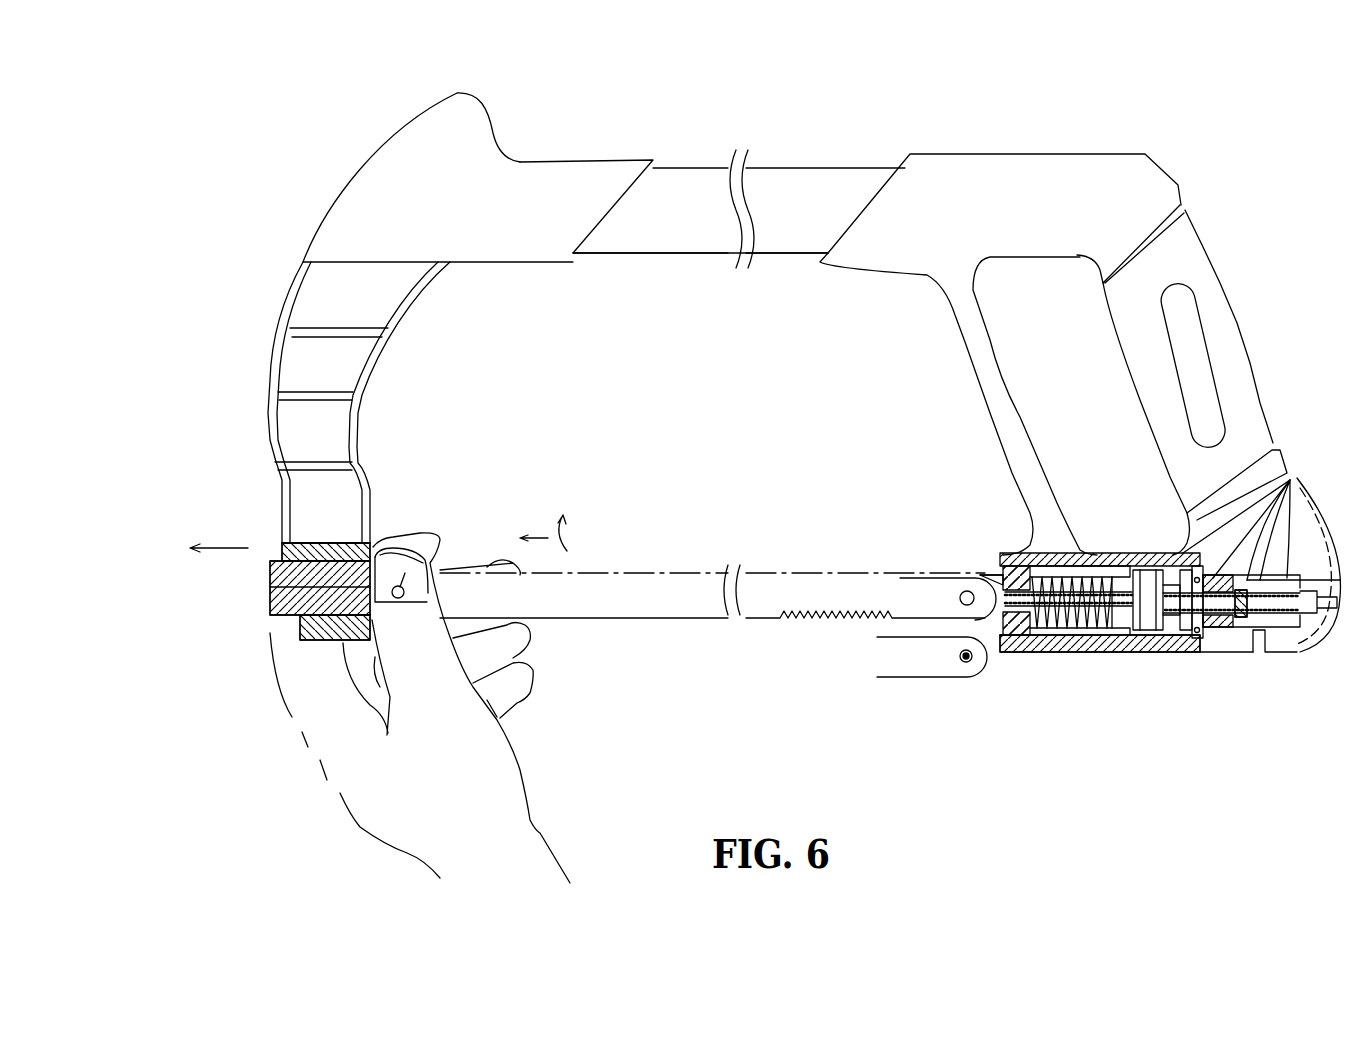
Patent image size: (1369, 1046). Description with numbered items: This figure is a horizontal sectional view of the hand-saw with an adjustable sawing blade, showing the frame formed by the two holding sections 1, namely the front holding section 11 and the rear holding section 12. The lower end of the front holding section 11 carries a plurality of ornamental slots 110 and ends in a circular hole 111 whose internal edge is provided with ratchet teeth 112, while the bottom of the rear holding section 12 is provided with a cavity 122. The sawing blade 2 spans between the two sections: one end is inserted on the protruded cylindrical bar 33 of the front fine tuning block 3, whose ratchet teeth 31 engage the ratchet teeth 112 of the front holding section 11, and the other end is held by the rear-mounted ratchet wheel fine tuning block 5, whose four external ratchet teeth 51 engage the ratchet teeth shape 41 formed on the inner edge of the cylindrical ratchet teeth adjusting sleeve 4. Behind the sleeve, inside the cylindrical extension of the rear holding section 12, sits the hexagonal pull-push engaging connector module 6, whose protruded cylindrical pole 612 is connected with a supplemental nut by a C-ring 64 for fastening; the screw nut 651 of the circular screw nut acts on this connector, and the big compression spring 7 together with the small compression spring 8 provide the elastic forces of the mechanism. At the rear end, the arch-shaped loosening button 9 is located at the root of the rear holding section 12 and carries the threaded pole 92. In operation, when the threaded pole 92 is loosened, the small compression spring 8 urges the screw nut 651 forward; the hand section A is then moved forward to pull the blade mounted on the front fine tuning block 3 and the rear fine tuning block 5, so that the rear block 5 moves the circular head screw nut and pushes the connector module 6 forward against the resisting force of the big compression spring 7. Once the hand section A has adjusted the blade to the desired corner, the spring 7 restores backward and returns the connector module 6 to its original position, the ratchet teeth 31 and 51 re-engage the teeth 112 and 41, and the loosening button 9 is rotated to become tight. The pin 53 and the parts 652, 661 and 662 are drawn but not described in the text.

The holding sections 1 is at (596, 147).
The front holding section 11 is at (345, 190).
The ornamental slot 110 is at (305, 360).
The circular hole 111 is at (318, 642).
The ratchet teeth 112 is at (280, 550).
The rear holding section 12 is at (1218, 283).
The cavity 122 is at (1085, 578).
The sawing blade 2 is at (847, 640).
The fine tuning block 3 is at (270, 590).
The ratchet teeth 31 is at (280, 562).
The protruded cylindrical bar 33 is at (403, 552).
The ratchet teeth adjusting sleeve 4 is at (1022, 652).
The ratchet teeth shape 41 is at (1005, 652).
The rear-mounted ratchet wheel fine tuning block 5 is at (992, 578).
The ratchet teeth 51 is at (990, 572).
The blade pin 53 is at (962, 592).
The hexagonal pull-push engaging connector module 6 is at (1150, 580).
The protruded cylindrical pole 612 is at (1185, 640).
The C-ring 64 is at (1140, 652).
The screw nut 651 is at (1112, 630).
The threaded sleeve 652 is at (1100, 640).
The slider body 661 is at (1145, 590).
The slider flange 662 is at (1210, 627).
The big compression spring 7 is at (1085, 632).
The small compression spring 8 is at (1168, 632).
The loosening button 9 is at (1328, 622).
The threaded pole 92 is at (1265, 632).
The hand section A is at (322, 770).